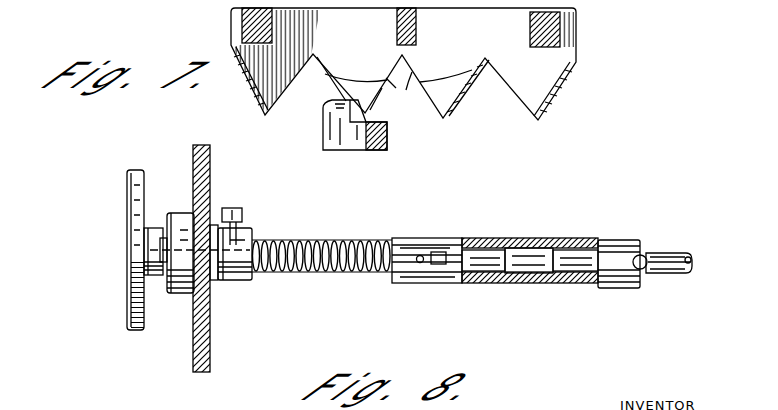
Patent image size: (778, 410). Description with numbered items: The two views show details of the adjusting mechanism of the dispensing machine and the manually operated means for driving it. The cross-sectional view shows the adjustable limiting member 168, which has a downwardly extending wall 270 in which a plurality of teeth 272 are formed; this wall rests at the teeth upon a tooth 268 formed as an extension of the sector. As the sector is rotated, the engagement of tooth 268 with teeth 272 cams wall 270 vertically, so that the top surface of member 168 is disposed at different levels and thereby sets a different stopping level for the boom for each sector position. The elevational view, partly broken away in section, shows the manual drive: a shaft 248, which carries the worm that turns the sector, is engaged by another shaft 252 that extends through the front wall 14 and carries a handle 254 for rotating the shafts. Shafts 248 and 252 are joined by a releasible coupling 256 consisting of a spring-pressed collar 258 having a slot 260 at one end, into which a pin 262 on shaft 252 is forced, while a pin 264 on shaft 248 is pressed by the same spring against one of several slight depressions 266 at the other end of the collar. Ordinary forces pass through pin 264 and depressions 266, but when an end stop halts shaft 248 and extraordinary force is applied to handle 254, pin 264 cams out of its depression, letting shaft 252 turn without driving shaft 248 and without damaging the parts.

In FIG. 7, the adjustable limiting member 168 is at (580, 80).
In FIG. 7, the tooth 268 is at (322, 137).
In FIG. 7, the downwardly extending wall 270 is at (453, 83).
In FIG. 7, the teeth 272 is at (404, 83).
In FIG. 8, the front wall 14 is at (195, 372).
In FIG. 8, the shaft 248 is at (670, 264).
In FIG. 8, the shaft 252 is at (290, 241).
In FIG. 8, the handle 254 is at (125, 294).
In FIG. 8, the releasible coupling 256 is at (521, 292).
In FIG. 8, the spring-pressed collar 258 is at (525, 240).
In FIG. 8, the slot 260 is at (441, 252).
In FIG. 8, the pin 262 is at (417, 256).
In FIG. 8, the pin 264 is at (647, 256).
In FIG. 8, the depressions 266 is at (632, 256).